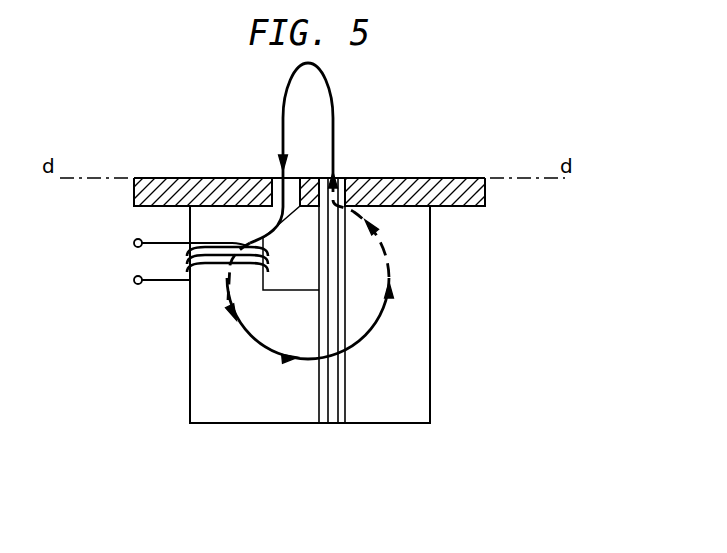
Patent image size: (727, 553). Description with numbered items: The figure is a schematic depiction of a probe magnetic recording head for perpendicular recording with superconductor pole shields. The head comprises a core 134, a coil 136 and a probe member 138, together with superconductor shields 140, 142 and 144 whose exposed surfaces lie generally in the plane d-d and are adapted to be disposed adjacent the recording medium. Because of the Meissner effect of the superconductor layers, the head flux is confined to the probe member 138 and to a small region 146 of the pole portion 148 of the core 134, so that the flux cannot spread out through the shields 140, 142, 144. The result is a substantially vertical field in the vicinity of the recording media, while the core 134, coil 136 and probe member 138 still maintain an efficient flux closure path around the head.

The core 134 is at (431, 401).
The coil 136 is at (162, 283).
The probe member 138 is at (333, 410).
The superconductor shield 140 is at (213, 178).
The superconductor shield 142 is at (312, 178).
The superconductor shield 144 is at (431, 179).
The small region 146 is at (280, 176).
The pole portion 148 is at (207, 327).